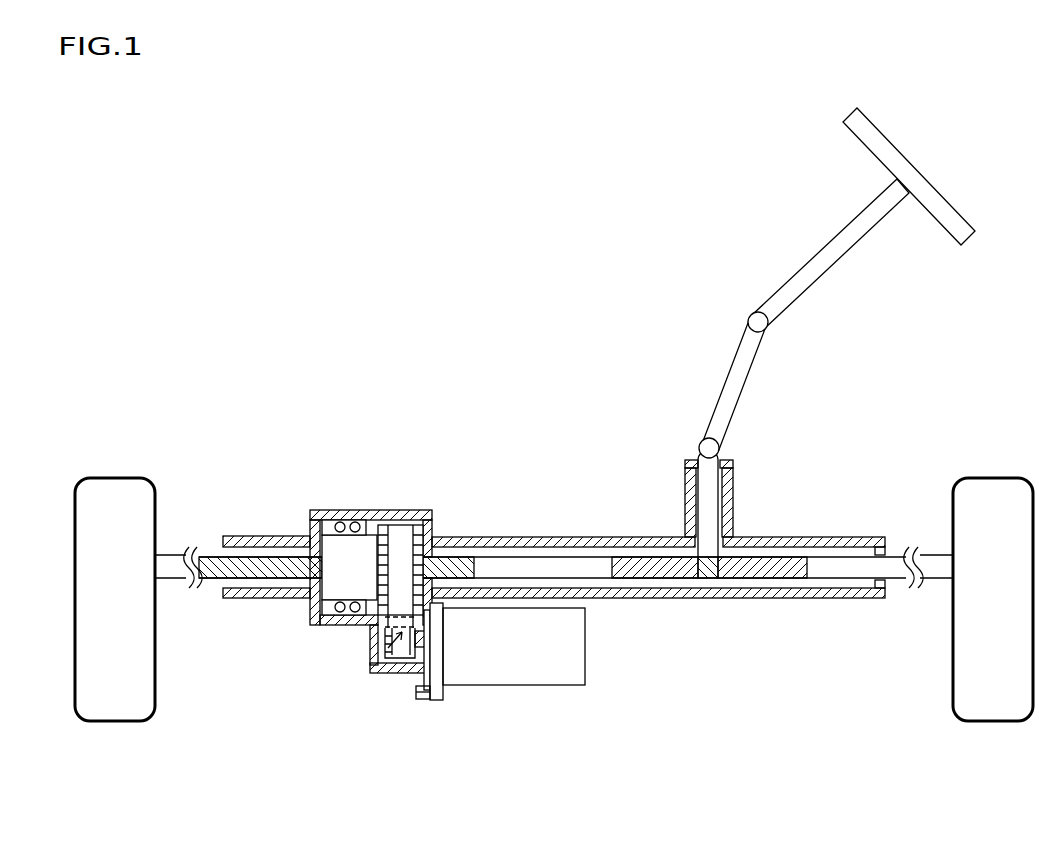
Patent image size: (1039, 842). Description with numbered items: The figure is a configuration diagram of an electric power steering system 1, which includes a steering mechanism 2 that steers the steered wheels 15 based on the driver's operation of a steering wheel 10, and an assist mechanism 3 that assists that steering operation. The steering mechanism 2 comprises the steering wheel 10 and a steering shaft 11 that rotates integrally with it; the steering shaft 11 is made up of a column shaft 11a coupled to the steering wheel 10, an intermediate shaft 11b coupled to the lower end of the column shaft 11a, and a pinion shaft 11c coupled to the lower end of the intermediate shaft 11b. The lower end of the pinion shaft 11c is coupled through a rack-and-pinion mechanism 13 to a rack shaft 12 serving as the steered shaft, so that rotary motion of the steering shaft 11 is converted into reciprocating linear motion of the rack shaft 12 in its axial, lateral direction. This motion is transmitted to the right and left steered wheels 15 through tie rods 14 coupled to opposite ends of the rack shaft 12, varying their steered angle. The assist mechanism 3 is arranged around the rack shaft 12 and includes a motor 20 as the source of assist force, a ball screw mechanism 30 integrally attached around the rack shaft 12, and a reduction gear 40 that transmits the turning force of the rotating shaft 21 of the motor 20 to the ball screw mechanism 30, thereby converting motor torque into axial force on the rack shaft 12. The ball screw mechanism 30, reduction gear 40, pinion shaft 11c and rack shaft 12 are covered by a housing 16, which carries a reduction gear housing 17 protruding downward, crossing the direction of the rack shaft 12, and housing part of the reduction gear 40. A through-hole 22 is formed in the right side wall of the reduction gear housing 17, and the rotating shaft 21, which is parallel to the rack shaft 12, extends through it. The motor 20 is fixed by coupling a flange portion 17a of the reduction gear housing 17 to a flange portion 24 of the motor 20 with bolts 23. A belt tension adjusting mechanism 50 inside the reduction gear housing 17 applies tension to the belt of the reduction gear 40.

The electric power steering system 1 is at (558, 224).
The steering mechanism 2 is at (943, 309).
The assist mechanism 3 is at (452, 504).
The steering wheel 10 is at (886, 125).
The steering shaft 11 is at (759, 368).
The column shaft 11a is at (785, 280).
The intermediate shaft 11b is at (734, 350).
The pinion shaft 11c is at (676, 456).
The rack shaft 12 is at (600, 598).
The rack-and-pinion mechanism 13 is at (729, 583).
The tie rod 14 is at (175, 555).
The steered wheel 15 is at (113, 478).
The housing 16 is at (608, 537).
The reduction gear housing 17 is at (360, 678).
The flange portion 17a is at (418, 678).
The motor 20 is at (519, 697).
The rotating shaft 21 is at (428, 662).
The through-hole 22 is at (420, 634).
The bolt 23 is at (419, 700).
The flange portion 24 is at (440, 700).
The ball screw mechanism 30 is at (318, 592).
The reduction gear 40 is at (383, 617).
The belt tension adjusting mechanism 50 is at (382, 673).